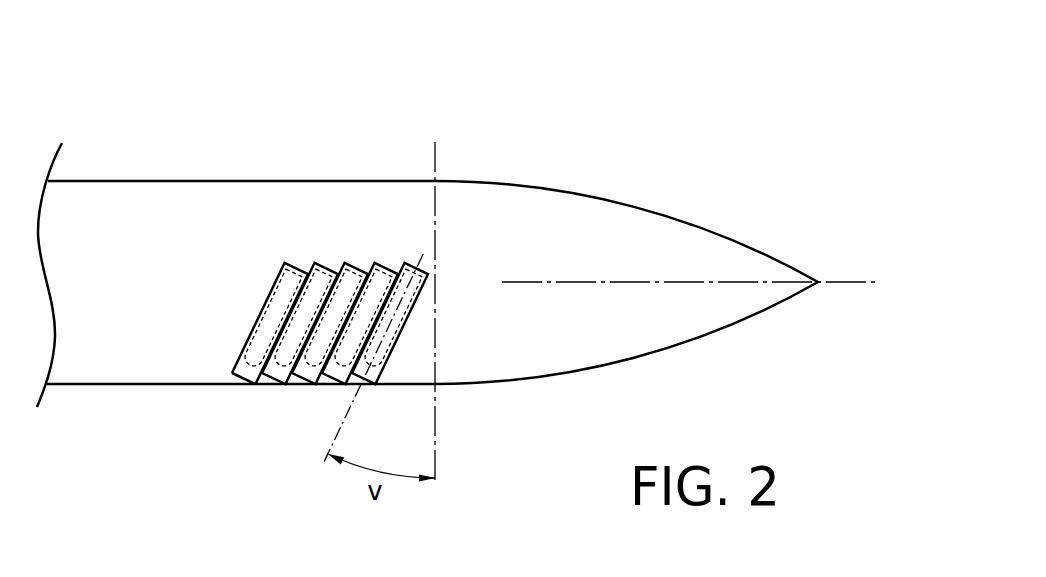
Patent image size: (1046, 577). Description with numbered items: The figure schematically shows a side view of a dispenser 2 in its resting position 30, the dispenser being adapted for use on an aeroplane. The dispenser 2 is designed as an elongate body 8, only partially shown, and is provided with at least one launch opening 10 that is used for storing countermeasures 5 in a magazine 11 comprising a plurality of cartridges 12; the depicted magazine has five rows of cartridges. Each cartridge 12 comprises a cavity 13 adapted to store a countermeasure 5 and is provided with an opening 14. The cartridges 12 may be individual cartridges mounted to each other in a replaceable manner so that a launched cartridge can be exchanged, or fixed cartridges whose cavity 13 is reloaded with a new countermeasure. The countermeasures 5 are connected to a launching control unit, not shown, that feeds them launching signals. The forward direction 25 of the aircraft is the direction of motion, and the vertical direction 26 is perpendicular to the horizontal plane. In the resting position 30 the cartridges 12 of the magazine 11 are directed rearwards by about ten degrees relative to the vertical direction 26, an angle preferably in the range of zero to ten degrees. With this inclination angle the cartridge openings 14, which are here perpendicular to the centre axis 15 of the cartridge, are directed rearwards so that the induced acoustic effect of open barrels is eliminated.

The dispenser 2 is at (642, 75).
The countermeasure 5 is at (283, 292).
The elongate body 8 is at (665, 250).
The launch opening 10 is at (255, 433).
The magazine 11 is at (258, 217).
The cartridge 12 is at (333, 267).
The cavity 13 is at (273, 317).
The opening 14 is at (245, 355).
The centre axis 15 is at (353, 397).
The forward direction 25 is at (847, 283).
The vertical direction 26 is at (435, 160).
The resting position 30 is at (626, 217).